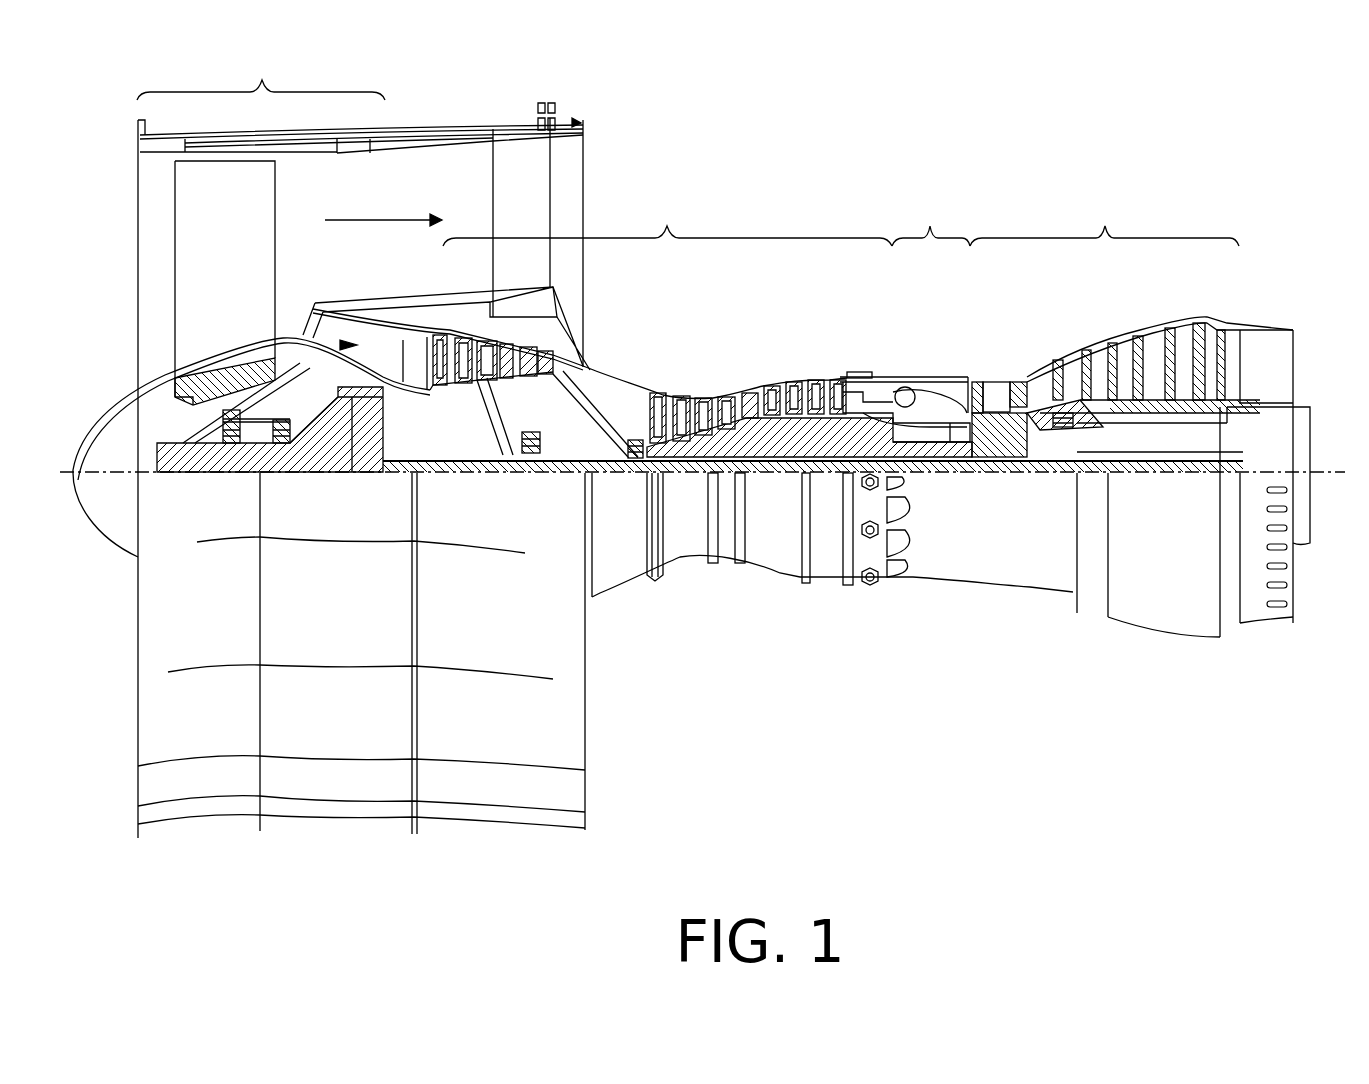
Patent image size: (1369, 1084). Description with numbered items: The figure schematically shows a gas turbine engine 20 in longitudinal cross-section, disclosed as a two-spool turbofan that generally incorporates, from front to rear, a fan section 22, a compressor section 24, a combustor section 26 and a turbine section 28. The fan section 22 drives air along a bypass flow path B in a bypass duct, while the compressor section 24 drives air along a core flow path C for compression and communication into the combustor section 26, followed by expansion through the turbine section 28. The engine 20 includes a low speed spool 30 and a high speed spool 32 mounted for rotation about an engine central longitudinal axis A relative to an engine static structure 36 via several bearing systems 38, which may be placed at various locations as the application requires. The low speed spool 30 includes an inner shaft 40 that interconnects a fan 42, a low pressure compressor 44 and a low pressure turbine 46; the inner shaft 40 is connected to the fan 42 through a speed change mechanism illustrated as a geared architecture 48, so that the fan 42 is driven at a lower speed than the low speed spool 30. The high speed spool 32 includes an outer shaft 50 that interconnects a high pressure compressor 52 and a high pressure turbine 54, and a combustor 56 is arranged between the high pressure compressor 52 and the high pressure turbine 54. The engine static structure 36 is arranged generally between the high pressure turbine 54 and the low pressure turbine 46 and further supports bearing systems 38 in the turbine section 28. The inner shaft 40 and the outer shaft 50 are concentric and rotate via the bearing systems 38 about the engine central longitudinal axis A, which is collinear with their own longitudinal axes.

The gas turbine engine 20 is at (1190, 97).
The fan section 22 is at (261, 71).
The compressor section 24 is at (667, 218).
The combustor section 26 is at (931, 218).
The turbine section 28 is at (1104, 218).
The low speed spool 30 is at (790, 482).
The high speed spool 32 is at (820, 393).
The engine static structure 36 is at (834, 586).
The bearing systems 38 is at (217, 477).
The inner shaft 40 is at (607, 477).
The fan 42 is at (205, 254).
The low pressure compressor 44 is at (503, 342).
The low pressure turbine 46 is at (1153, 332).
The geared architecture 48 is at (363, 442).
The outer shaft 50 is at (957, 448).
The high pressure compressor 52 is at (726, 398).
The high pressure turbine 54 is at (1000, 378).
The combustor 56 is at (920, 397).
The engine central longitudinal axis A is at (1320, 472).
The bypass flow path B is at (383, 213).
The core flow path C is at (268, 337).